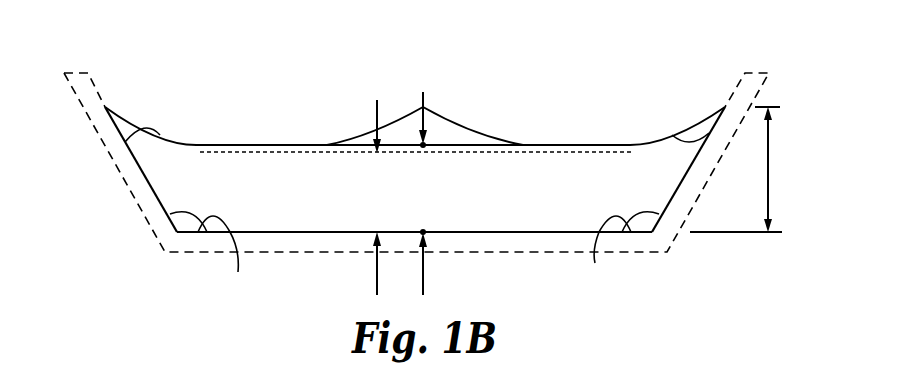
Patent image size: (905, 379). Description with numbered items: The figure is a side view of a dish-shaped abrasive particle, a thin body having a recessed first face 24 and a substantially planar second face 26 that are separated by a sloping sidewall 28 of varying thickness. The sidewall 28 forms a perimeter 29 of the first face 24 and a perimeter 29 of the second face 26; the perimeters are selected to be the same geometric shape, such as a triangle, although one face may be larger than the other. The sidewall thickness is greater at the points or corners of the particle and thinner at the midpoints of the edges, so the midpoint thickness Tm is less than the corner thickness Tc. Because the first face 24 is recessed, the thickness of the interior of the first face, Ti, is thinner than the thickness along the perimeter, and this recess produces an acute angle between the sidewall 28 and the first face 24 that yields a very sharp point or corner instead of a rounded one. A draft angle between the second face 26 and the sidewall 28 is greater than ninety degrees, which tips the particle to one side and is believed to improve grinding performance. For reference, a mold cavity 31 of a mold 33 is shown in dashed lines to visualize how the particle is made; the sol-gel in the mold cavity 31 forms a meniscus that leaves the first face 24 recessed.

The first face 24 is at (542, 145).
The second face 26 is at (638, 233).
The sidewall 28 is at (151, 188).
The perimeter 29 is at (173, 239).
The mold cavity 31 is at (282, 85).
The mold 33 is at (87, 100).
The interior thickness Ti is at (377, 270).
The midpoint thickness Tm is at (425, 270).
The corner thickness Tc is at (772, 167).